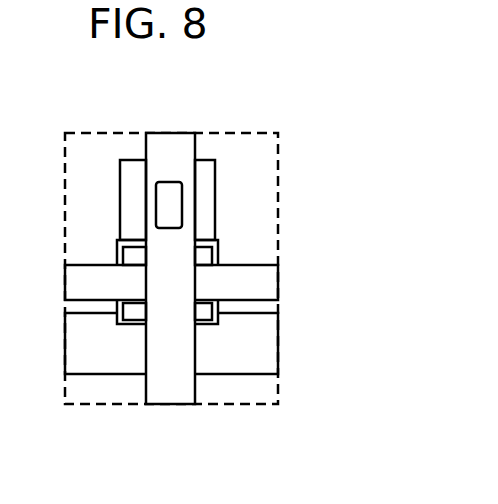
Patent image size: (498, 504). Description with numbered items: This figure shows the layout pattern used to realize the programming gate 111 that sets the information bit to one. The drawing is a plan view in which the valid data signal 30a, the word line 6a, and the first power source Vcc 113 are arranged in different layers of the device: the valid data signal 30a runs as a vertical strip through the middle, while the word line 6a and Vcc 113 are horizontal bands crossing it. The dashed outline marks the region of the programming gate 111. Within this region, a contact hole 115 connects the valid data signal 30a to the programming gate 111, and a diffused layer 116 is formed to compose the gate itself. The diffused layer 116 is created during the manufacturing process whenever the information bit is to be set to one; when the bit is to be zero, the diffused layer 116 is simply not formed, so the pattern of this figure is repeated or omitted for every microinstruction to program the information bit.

The programming gate 111 is at (222, 131).
The contact hole 115 is at (215, 177).
The diffused layer 116 is at (217, 243).
The word line 6a is at (277, 277).
The first power source (Vcc) 113 is at (277, 343).
The valid data signal 30a is at (173, 395).